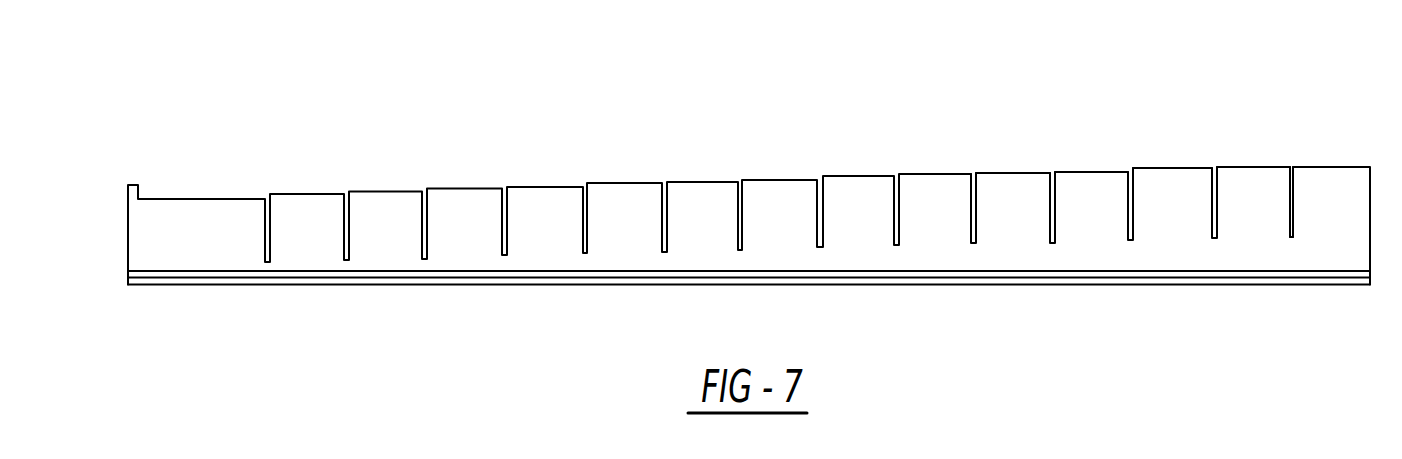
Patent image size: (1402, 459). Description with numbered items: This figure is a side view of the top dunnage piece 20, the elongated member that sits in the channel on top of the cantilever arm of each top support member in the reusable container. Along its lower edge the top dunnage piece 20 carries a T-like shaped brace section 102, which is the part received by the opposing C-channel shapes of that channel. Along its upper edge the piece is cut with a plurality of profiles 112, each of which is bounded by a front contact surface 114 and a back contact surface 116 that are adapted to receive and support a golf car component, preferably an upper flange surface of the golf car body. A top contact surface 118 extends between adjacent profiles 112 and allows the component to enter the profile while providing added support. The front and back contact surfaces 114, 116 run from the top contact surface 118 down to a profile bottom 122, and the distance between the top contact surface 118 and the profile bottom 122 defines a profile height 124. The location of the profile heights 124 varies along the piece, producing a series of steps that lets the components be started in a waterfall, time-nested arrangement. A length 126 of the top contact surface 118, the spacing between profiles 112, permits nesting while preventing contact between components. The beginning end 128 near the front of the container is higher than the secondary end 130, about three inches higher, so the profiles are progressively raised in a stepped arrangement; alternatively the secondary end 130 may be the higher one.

The top dunnage piece 20 is at (851, 143).
The T-like shaped brace section 102 is at (505, 277).
The profile 112 is at (1294, 162).
The front contact surface 114 is at (1212, 194).
The back contact surface 116 is at (1214, 222).
The top contact surface 118 is at (1254, 167).
The profile bottom 122 is at (1290, 240).
The profile height 124 is at (1127, 173).
The length of the top contact surface 126 is at (973, 172).
The beginning end 128 is at (1372, 247).
The secondary end 130 is at (127, 213).